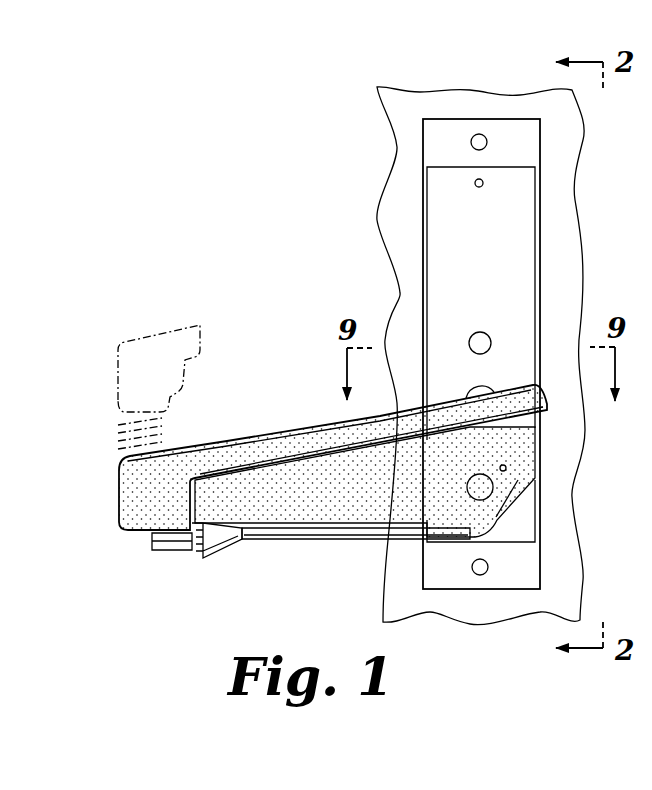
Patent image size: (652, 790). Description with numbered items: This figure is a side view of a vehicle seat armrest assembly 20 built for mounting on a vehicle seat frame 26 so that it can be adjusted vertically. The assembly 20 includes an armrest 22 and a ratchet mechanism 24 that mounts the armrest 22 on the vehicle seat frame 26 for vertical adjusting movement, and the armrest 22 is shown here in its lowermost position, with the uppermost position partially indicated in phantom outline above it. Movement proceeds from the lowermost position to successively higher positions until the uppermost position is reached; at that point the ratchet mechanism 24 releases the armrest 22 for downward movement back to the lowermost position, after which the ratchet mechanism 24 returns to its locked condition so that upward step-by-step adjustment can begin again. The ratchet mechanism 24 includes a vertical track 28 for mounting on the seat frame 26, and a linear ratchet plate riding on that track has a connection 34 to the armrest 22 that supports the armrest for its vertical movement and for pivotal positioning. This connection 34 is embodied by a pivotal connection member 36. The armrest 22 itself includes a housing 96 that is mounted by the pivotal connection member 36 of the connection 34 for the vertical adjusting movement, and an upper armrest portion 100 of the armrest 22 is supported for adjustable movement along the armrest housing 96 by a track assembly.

The vehicle seat armrest assembly 20 is at (308, 277).
The armrest 22 is at (308, 423).
The ratchet mechanism 24 is at (546, 268).
The vehicle seat frame 26 is at (395, 155).
The vertical track 28 is at (546, 187).
The connection 34 is at (500, 481).
The pivotal connection member 36 is at (483, 488).
The housing 96 is at (348, 498).
The upper armrest portion 100 is at (347, 438).